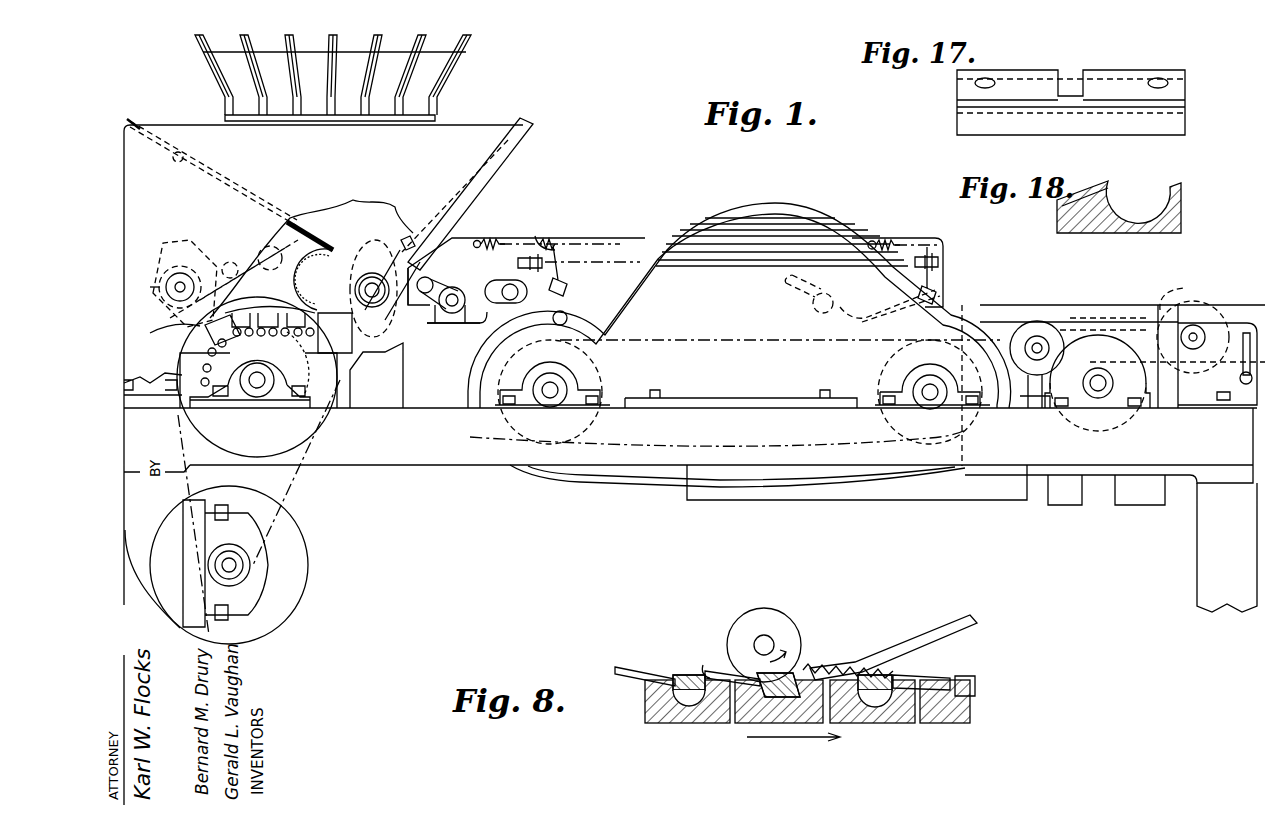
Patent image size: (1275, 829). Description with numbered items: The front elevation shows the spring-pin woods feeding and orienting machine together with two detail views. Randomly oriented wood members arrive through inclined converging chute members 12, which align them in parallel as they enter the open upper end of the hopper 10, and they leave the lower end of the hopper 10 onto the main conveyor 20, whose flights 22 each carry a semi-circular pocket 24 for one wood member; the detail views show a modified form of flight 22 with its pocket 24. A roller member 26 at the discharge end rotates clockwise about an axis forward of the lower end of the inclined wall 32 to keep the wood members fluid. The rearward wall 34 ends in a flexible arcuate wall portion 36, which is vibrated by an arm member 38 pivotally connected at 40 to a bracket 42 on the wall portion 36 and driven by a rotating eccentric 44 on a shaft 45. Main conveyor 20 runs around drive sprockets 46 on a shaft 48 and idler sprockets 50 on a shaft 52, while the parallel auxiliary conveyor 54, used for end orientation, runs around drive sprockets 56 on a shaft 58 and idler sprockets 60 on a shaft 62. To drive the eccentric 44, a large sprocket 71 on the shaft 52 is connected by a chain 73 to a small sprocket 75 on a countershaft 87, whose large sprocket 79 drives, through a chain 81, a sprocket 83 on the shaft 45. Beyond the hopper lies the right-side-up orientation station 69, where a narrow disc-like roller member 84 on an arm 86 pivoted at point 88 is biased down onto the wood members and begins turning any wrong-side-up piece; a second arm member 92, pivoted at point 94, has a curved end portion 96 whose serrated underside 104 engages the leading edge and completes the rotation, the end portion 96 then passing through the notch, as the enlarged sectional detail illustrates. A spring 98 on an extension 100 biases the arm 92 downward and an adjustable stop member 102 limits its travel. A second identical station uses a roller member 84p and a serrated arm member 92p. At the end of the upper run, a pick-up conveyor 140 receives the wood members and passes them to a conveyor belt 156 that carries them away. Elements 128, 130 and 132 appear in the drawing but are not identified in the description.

In FIG. 1, the hopper 10 is at (526, 128).
In FIG. 1, the inclined converging chute members 12 is at (443, 92).
In FIG. 1, the main conveyor member 20 is at (266, 300).
In FIG. 8, the main conveyor member 20 is at (645, 726).
In FIG. 1, the flight 22 is at (178, 333).
In FIG. 8, the flight 22 is at (640, 668).
In FIG. 17, the flight 22 is at (1110, 70).
In FIG. 18, the flight 22 is at (1105, 233).
In FIG. 1, the pocket 24 is at (310, 330).
In FIG. 8, the pocket 24 is at (700, 700).
In FIG. 1, the roller member 26 is at (375, 276).
In FIG. 1, the inclined wall 32 is at (450, 185).
In FIG. 1, the rearward wall 34 is at (222, 176).
In FIG. 1, the arcuate wall portion 36 is at (284, 276).
In FIG. 1, the arm member 38 is at (218, 265).
In FIG. 1, the pivotal connection 40 is at (267, 248).
In FIG. 1, the bracket 42 is at (312, 246).
In FIG. 1, the rotating eccentric 44 is at (178, 262).
In FIG. 1, the shaft 45 is at (175, 288).
In FIG. 1, the drive sprockets 46 is at (1120, 422).
In FIG. 1, the shaft 48 is at (1098, 383).
In FIG. 1, the idler sprockets 50 is at (290, 400).
In FIG. 1, the shaft 52 is at (252, 390).
In FIG. 1, the auxiliary conveyor 54 is at (787, 351).
In FIG. 1, the drive sprockets 56 is at (882, 372).
In FIG. 1, the shaft 58 is at (930, 406).
In FIG. 1, the idler sprockets 60 is at (600, 378).
In FIG. 1, the shaft 62 is at (550, 406).
In FIG. 1, the right-side-up orientation station 69 is at (424, 328).
In FIG. 1, the large sprocket 71 is at (312, 438).
In FIG. 1, the chain 73 is at (298, 478).
In FIG. 1, the small sprocket 75 is at (252, 575).
In FIG. 1, the large sprocket 79 is at (305, 603).
In FIG. 1, the chain 81 is at (285, 488).
In FIG. 1, the sprocket 83 is at (165, 278).
In FIG. 1, the roller member 84 is at (460, 296).
In FIG. 8, the roller member 84 is at (785, 620).
In FIG. 1, the roller member 84p is at (833, 300).
In FIG. 1, the arm 86 is at (440, 292).
In FIG. 1, the countershaft 87 is at (245, 560).
In FIG. 1, the pivot point 88 is at (430, 278).
In FIG. 1, the second arm member 92 is at (512, 287).
In FIG. 8, the second arm member 92 is at (956, 628).
In FIG. 1, the arm member 92p is at (870, 319).
In FIG. 1, the pivot point 94 is at (563, 278).
In FIG. 1, the curved end portion 96 is at (432, 326).
In FIG. 8, the curved end portion 96 is at (848, 670).
In FIG. 1, the spring 98 is at (492, 241).
In FIG. 1, the extension 100 is at (550, 242).
In FIG. 1, the adjustable stop member 102 is at (537, 236).
In FIG. 8, the serrations 104 is at (805, 668).
In FIG. 1, the roller 128 is at (567, 320).
In FIG. 1, the hood 130 is at (680, 225).
In FIG. 1, the hood louvers 132 is at (702, 225).
In FIG. 1, the pick-up conveyor 140 is at (1029, 313).
In FIG. 1, the conveyor belt 156 is at (1234, 312).